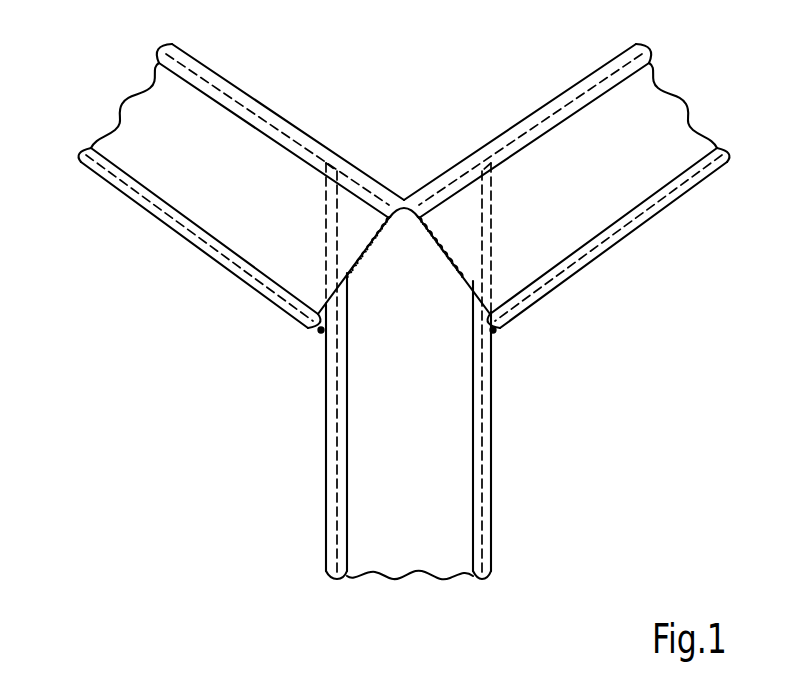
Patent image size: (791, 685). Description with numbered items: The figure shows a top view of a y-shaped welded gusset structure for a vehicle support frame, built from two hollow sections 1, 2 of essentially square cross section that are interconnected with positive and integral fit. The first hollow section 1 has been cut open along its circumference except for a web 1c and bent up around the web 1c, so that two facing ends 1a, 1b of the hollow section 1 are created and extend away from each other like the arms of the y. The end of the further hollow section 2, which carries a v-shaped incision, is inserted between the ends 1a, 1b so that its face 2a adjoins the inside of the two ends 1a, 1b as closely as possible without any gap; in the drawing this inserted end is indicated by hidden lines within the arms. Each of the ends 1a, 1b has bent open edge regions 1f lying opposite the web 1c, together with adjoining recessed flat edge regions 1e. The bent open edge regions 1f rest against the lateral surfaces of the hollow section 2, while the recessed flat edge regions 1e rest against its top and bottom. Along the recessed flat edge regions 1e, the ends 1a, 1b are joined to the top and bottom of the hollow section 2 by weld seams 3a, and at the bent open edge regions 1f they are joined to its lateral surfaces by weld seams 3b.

The first hollow section 1 is at (173, 262).
The end of the first hollow section 1a is at (252, 137).
The end of the first hollow section 1b is at (575, 137).
The web 1c is at (404, 197).
The recessed flat edge region 1e is at (486, 292).
The bent open edge region 1f is at (316, 326).
The further hollow section 2 is at (298, 507).
The face of the hollow section 2a is at (343, 180).
The weld seam 3a is at (353, 262).
The weld seam 3b is at (321, 334).